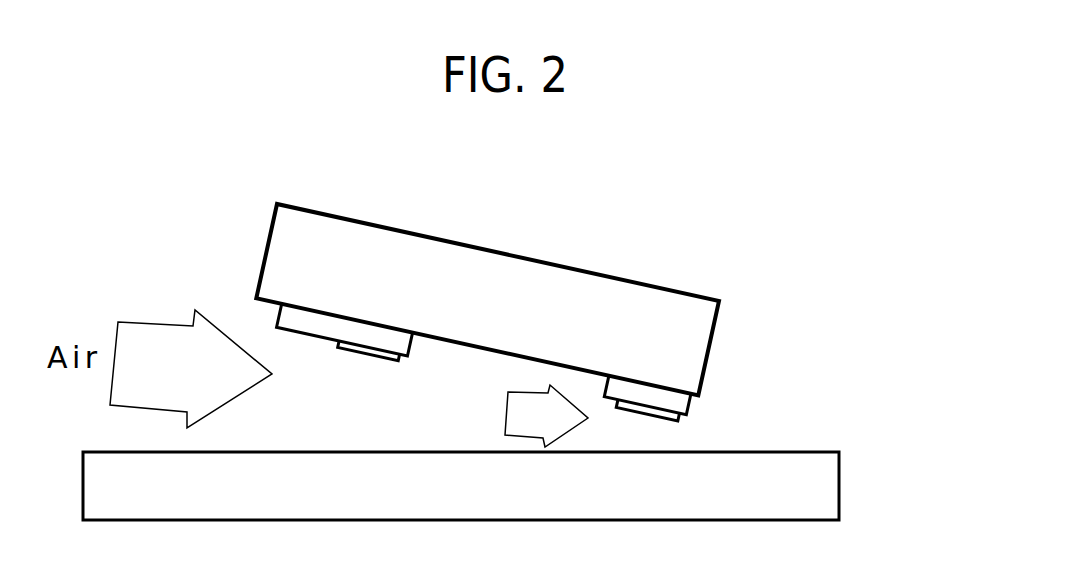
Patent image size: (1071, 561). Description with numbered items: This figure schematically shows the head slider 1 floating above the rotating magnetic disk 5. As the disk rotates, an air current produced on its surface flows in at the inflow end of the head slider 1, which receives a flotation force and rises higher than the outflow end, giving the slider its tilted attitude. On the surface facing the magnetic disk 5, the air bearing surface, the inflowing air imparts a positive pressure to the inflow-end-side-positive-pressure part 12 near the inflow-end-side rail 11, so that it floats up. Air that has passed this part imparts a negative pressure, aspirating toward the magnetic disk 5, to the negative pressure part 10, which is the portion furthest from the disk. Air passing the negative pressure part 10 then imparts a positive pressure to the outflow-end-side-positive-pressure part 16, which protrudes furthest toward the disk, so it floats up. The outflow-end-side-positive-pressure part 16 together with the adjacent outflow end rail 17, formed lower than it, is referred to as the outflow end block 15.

The head slider 1 is at (494, 286).
The magnetic disk 5 is at (835, 468).
The negative pressure part 10 is at (461, 347).
The inflow-end-side rail 11 is at (298, 336).
The inflow-end-side-positive-pressure part 12 is at (357, 355).
The outflow end block 15 is at (698, 408).
The outflow-end-side-positive-pressure part 16 is at (667, 423).
The outflow end rail 17 is at (607, 401).